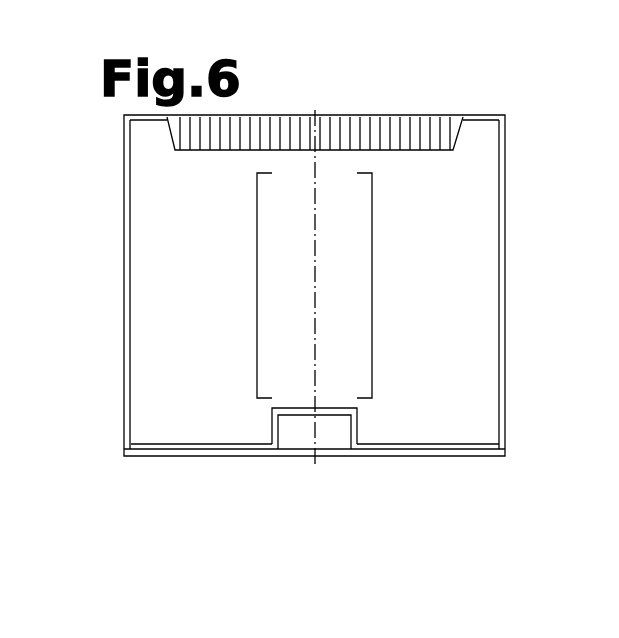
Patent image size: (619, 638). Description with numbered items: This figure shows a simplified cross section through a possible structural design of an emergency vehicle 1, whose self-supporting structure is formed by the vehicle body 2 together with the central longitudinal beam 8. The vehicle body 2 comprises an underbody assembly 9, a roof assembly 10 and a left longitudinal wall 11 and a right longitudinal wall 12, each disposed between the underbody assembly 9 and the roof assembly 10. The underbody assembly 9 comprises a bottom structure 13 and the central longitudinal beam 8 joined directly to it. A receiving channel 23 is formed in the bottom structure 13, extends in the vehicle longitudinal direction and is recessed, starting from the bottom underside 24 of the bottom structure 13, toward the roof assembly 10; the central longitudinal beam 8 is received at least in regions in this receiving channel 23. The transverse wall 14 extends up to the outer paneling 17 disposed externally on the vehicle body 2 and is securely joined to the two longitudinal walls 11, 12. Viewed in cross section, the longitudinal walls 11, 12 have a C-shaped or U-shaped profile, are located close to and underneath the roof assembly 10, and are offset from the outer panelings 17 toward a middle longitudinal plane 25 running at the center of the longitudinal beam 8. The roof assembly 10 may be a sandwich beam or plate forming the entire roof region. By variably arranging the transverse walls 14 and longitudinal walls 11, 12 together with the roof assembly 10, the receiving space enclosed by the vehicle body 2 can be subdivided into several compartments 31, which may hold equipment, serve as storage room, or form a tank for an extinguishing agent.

The emergency vehicle 1 is at (497, 100).
The vehicle body 2 is at (513, 140).
The central longitudinal beam 8 is at (285, 460).
The underbody assembly 9 is at (362, 458).
The roof assembly 10 is at (410, 108).
The left longitudinal wall 11 is at (246, 187).
The right longitudinal wall 12 is at (383, 187).
The bottom structure 13 is at (407, 459).
The transverse wall 14 is at (200, 297).
The outer paneling 17 is at (112, 327).
The receiving channel 23 is at (352, 428).
The bottom underside 24 is at (165, 457).
The middle longitudinal plane 25 is at (314, 312).
The compartment 31 is at (246, 258).